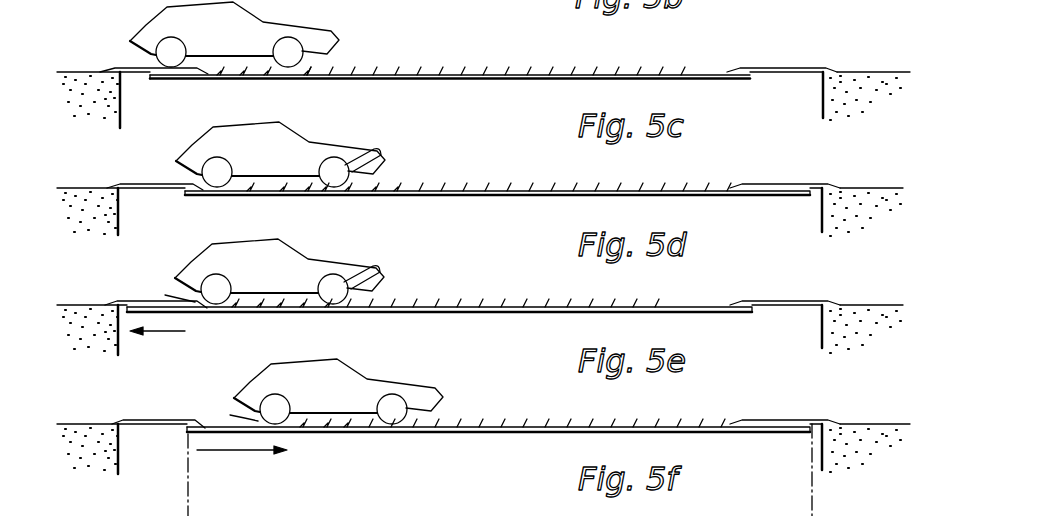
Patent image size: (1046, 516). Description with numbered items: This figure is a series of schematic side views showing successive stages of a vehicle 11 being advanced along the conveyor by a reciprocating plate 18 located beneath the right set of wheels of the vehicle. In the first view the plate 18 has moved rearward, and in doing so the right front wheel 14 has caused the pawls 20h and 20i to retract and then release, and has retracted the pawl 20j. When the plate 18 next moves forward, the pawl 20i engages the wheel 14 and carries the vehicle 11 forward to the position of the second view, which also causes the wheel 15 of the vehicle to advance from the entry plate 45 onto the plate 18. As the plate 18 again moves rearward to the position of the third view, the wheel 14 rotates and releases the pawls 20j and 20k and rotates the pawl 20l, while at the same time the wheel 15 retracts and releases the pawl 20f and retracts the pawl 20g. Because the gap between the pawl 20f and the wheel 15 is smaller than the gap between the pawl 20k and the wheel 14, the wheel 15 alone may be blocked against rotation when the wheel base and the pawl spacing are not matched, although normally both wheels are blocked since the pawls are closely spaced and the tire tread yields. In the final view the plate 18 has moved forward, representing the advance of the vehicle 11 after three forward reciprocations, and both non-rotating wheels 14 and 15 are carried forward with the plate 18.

In FIG. 5C, the vehicle 11 is at (234, 33).
In FIG. 5D, the vehicle 11 is at (308, 142).
In FIG. 5E, the vehicle 11 is at (303, 258).
In FIG. 5F, the vehicle 11 is at (420, 387).
In FIG. 5C, the right front wheel 14 is at (295, 47).
In FIG. 5D, the right front wheel 14 is at (362, 152).
In FIG. 5E, the right front wheel 14 is at (372, 282).
In FIG. 5C, the wheel 15 is at (143, 48).
In FIG. 5D, the wheel 15 is at (203, 165).
In FIG. 5E, the wheel 15 is at (200, 286).
In FIG. 5F, the wheel 15 is at (252, 384).
In FIG. 5C, the plate 18 is at (457, 80).
In FIG. 5D, the plate 18 is at (504, 192).
In FIG. 5E, the plate 18 is at (490, 312).
In FIG. 5F, the plate 18 is at (467, 435).
In FIG. 5D, the pawl 20f is at (253, 193).
In FIG. 5E, the pawl 20f is at (165, 295).
In FIG. 5F, the pawl 20f is at (230, 415).
In FIG. 5C, the pawl 20g is at (224, 80).
In FIG. 5D, the pawl 20g is at (286, 193).
In FIG. 5E, the pawl 20g is at (233, 309).
In FIG. 5C, the pawl 20h is at (246, 76).
In FIG. 5D, the pawl 20h is at (309, 193).
In FIG. 5C, the pawl 20i is at (266, 76).
In FIG. 5D, the pawl 20i is at (325, 193).
In FIG. 5C, the pawl 20j is at (305, 73).
In FIG. 5D, the pawl 20j is at (351, 194).
In FIG. 5E, the pawl 20j is at (280, 309).
In FIG. 5D, the pawl 20k is at (377, 193).
In FIG. 5E, the pawl 20k is at (305, 304).
In FIG. 5D, the pawl 20l is at (400, 193).
In FIG. 5E, the pawl 20l is at (330, 310).
In FIG. 5D, the entry plate 45 is at (132, 186).